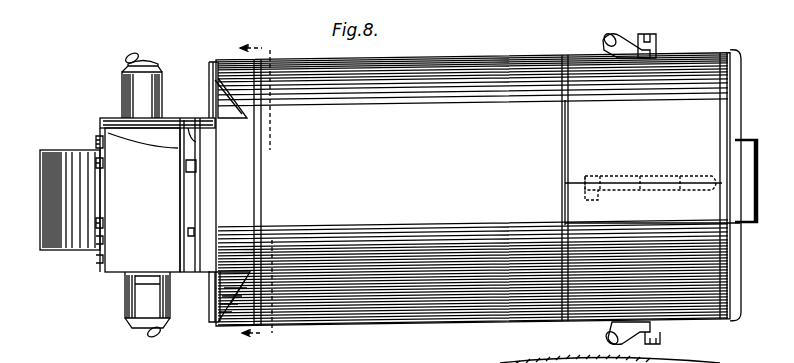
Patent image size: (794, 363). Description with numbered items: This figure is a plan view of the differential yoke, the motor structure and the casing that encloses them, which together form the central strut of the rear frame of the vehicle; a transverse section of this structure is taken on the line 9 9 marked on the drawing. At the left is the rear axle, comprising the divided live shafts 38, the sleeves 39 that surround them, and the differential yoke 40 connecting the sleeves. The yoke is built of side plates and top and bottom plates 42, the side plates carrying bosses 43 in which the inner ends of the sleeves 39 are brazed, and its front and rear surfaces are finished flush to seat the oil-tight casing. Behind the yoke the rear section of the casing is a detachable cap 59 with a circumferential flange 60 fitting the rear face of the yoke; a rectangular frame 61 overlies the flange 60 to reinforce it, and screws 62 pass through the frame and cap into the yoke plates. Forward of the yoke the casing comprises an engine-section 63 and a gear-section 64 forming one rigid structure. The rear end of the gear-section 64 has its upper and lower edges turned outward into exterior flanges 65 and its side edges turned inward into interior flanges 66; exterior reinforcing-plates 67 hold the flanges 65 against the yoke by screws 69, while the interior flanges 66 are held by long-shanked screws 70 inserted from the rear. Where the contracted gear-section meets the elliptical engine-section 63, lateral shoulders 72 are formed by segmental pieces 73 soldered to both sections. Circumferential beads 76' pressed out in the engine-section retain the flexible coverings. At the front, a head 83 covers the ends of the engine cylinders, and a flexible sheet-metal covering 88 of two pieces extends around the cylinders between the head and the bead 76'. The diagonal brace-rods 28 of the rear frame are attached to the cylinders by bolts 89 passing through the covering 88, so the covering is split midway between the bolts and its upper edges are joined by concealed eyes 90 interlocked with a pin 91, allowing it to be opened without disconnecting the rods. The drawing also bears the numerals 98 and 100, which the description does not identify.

The section line 9 is at (256, 189).
The diagonal brace-rods 28 is at (608, 36).
The divided live shafts 38 is at (137, 57).
The sleeves 39 is at (128, 68).
The differential yoke 40 is at (122, 247).
The top and bottom plates 42 is at (120, 276).
The bosses 43 is at (124, 90).
The detachable cap 59 is at (42, 210).
The circumferential flange 60 is at (103, 150).
The frame 61 is at (105, 185).
The screws 62 is at (100, 226).
The engine-section 63 is at (478, 189).
The gear-section 64 is at (196, 126).
The exterior flanges 65 is at (186, 272).
The interior flanges 66 is at (178, 126).
The exterior reinforcing-plates 67 is at (186, 210).
The screws 69 is at (190, 233).
The long-shanked screws 70 is at (105, 122).
The shoulders 72 is at (213, 62).
The segmental pieces 73 is at (215, 76).
The circumferential beads 76' is at (582, 162).
The head 83 is at (742, 264).
The flexible sheet-metal covering 88 is at (652, 172).
The bolts 89 is at (656, 36).
The eyes 90 is at (612, 180).
The pin 91 is at (592, 180).
The bottom clamp 98 is at (622, 346).
The base arc 100 is at (506, 348).